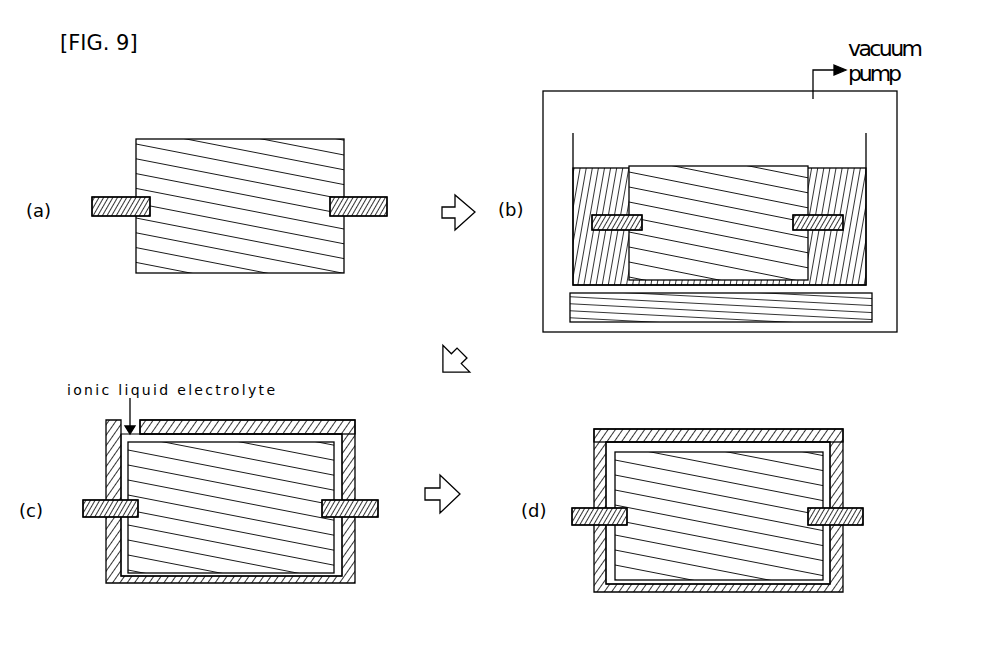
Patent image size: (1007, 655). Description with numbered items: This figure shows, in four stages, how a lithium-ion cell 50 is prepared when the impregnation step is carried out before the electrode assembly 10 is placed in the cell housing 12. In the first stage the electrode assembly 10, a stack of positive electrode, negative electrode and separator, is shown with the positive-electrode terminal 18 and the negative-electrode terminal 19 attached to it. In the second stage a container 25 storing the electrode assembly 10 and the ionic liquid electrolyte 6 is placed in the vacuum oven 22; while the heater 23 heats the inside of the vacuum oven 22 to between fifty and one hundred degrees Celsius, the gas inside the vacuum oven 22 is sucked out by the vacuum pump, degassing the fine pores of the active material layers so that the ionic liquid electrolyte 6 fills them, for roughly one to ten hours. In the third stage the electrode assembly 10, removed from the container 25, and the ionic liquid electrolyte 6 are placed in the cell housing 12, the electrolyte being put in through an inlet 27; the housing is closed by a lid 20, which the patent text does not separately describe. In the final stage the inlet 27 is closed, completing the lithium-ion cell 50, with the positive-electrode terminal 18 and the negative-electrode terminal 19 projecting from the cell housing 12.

The ionic liquid electrolyte 6 is at (836, 184).
The electrode assembly 10 is at (236, 164).
The cell housing 12 is at (228, 584).
The positive-electrode terminal 18 is at (122, 198).
The negative-electrode terminal 19 is at (352, 198).
The casing lid 20 is at (300, 428).
The vacuum oven 22 is at (608, 333).
The heater 23 is at (820, 306).
The container 25 is at (868, 266).
The inlet 27 is at (114, 428).
The lithium-ion cell 50 is at (836, 420).